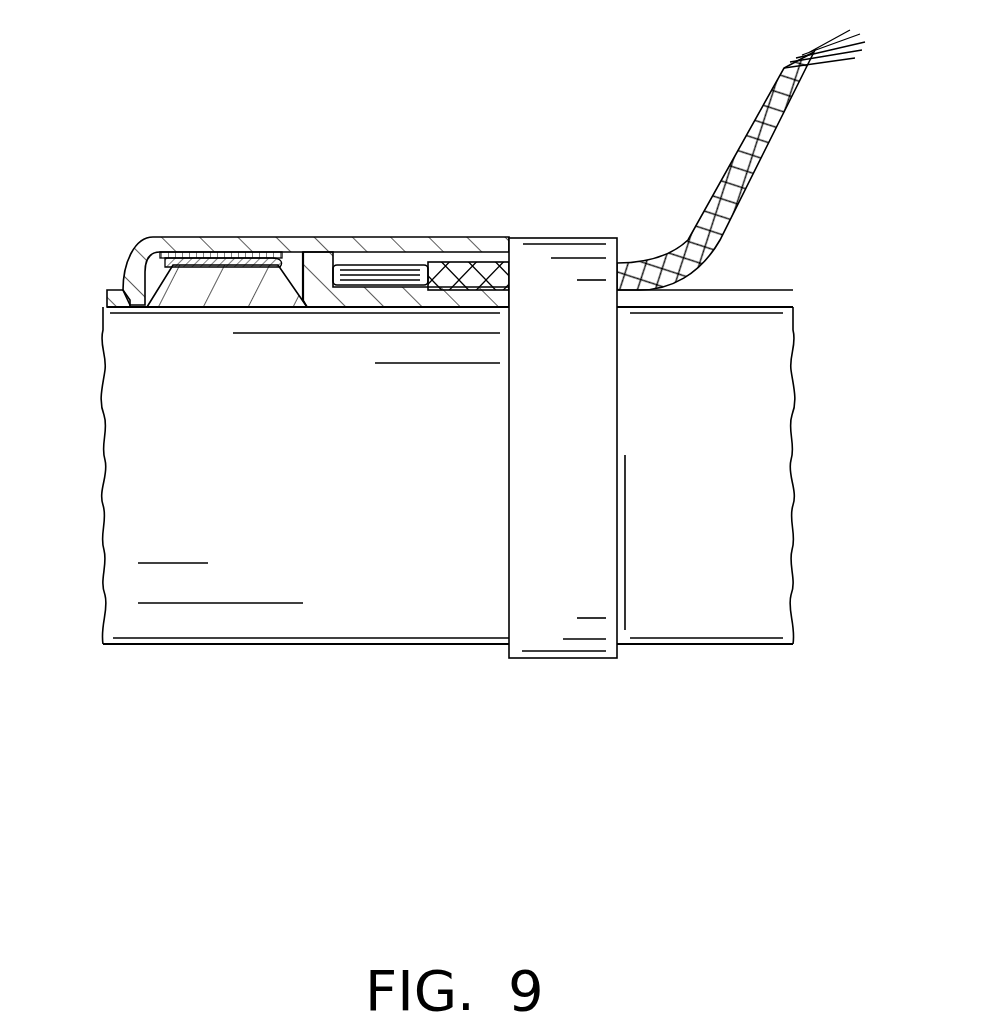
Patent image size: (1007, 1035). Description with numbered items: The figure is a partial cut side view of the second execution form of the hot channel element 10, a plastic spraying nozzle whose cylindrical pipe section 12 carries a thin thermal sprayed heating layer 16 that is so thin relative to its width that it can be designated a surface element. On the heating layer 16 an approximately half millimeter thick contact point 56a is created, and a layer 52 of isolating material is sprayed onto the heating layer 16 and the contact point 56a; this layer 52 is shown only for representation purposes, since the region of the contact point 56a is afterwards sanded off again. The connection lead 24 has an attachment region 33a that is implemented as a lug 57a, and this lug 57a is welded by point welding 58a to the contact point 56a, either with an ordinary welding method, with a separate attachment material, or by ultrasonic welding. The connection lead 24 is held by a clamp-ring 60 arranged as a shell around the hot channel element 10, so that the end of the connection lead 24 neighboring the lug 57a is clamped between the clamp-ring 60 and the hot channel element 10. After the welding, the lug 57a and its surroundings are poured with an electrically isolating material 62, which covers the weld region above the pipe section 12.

The hot channel element 10 is at (543, 130).
The cylindrical pipe section 12 is at (416, 613).
The heating layer 16 is at (123, 645).
The connection lead 24 is at (783, 138).
The attachment region 33a is at (358, 230).
The layer from an isolating material 52 is at (112, 288).
The contact point 56a is at (227, 292).
The lug 57a is at (302, 300).
The point welding 58a is at (183, 264).
The clamp-ring 60 is at (537, 630).
The electrically isolating material 62 is at (260, 245).